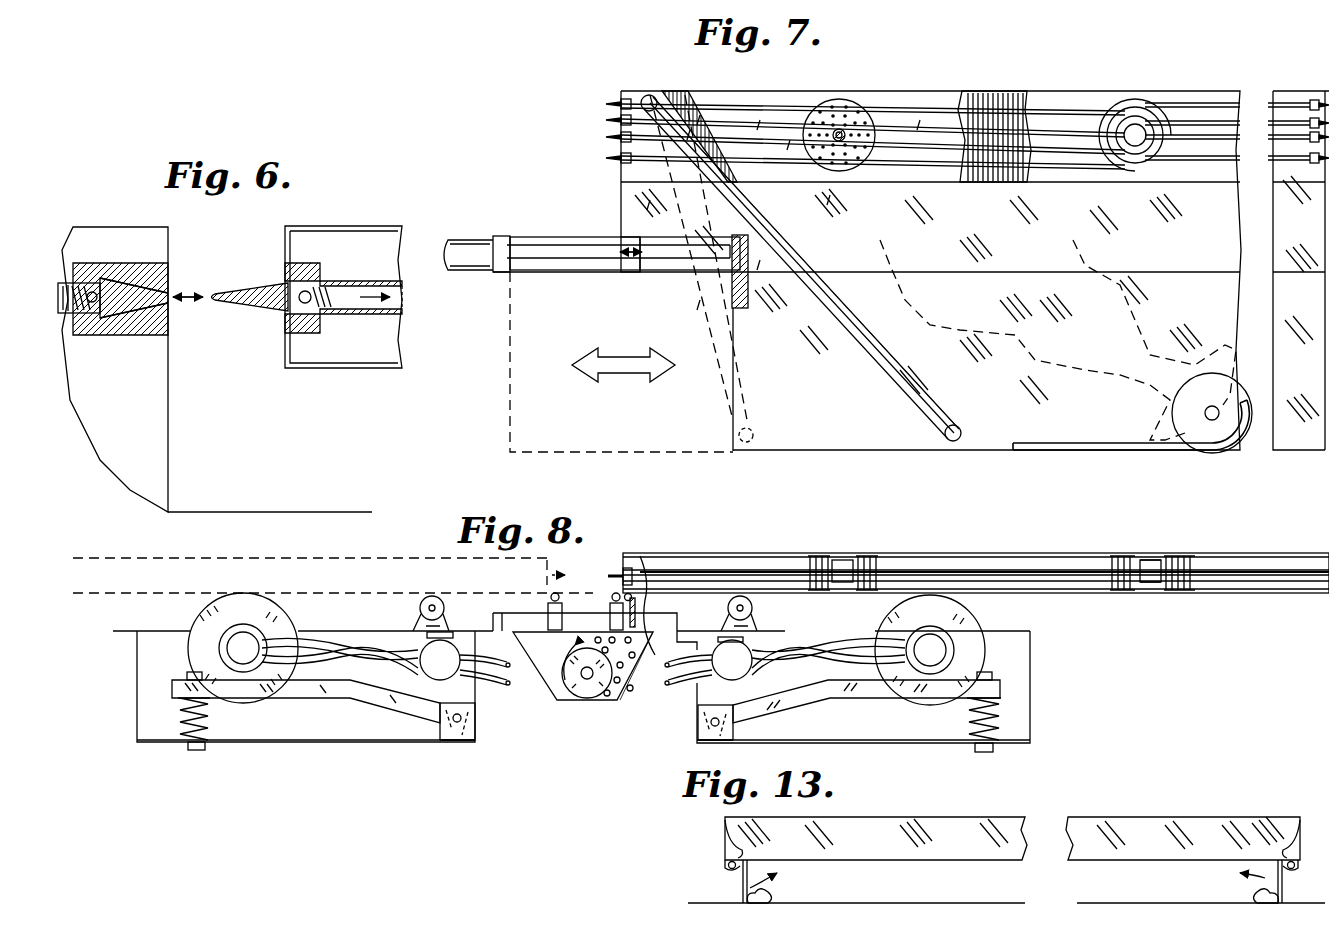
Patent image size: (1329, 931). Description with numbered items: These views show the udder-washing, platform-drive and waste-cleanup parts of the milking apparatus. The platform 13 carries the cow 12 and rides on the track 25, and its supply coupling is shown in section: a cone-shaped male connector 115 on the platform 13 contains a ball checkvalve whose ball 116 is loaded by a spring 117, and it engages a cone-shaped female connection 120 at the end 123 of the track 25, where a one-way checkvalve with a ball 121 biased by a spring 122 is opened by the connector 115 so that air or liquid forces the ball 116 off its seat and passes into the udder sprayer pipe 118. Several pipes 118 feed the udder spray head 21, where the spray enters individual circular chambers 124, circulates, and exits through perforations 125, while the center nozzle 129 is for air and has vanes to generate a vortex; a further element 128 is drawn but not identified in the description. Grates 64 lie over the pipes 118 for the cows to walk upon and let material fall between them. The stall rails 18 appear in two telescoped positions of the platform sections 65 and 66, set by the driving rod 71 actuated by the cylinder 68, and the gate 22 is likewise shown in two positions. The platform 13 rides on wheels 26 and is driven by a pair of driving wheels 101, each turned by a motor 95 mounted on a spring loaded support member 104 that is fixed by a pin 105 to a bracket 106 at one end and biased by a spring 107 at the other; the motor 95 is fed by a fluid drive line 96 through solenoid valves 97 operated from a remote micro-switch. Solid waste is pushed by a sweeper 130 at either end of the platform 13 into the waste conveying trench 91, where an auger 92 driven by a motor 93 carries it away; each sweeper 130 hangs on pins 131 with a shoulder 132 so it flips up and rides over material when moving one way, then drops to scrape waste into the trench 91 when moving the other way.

In FIG. 7, the cow 12 is at (1132, 305).
In FIG. 6, the platform 13 is at (340, 234).
In FIG. 7, the platform 13 is at (997, 455).
In FIG. 8, the platform 13 is at (692, 548).
In FIG. 13, the platform 13 is at (880, 847).
In FIG. 7, the stall rails 18 is at (862, 340).
In FIG. 7, the udder spray head 21 is at (857, 100).
In FIG. 8, the udder spray head 21 is at (1185, 530).
In FIG. 7, the gate 22 is at (1103, 452).
In FIG. 6, the track 25 is at (290, 512).
In FIG. 8, the wheels 26 is at (427, 597).
In FIG. 7, the grates 64 is at (1003, 105).
In FIG. 7, the platform section 65 is at (840, 440).
In FIG. 7, the platform section 66 is at (630, 200).
In FIG. 7, the cylinder 68 is at (465, 240).
In FIG. 7, the driving rod 71 is at (538, 250).
In FIG. 8, the waste conveying trench 91 is at (622, 680).
In FIG. 8, the auger 92 is at (553, 682).
In FIG. 8, the motor 93 is at (583, 692).
In FIG. 8, the motor 95 is at (258, 680).
In FIG. 8, the fluid drive line 96 is at (387, 662).
In FIG. 8, the solenoid valves 97 is at (445, 675).
In FIG. 8, the driving wheels 101 is at (243, 597).
In FIG. 8, the spring loaded support member 104 is at (298, 690).
In FIG. 8, the pin 105 is at (462, 718).
In FIG. 8, the bracket 106 is at (455, 748).
In FIG. 8, the spring 107 is at (198, 750).
In FIG. 6, the cone-shaped male connector 115 is at (248, 270).
In FIG. 7, the cone-shaped male connector 115 is at (615, 104).
In FIG. 8, the cone-shaped male connector 115 is at (620, 570).
In FIG. 6, the ball 116 is at (310, 306).
In FIG. 6, the spring 117 is at (340, 275).
In FIG. 6, the udder sprayer pipe 118 is at (382, 314).
In FIG. 7, the udder sprayer pipe 118 is at (735, 92).
In FIG. 8, the udder sprayer pipe 118 is at (770, 573).
In FIG. 6, the cone-shaped female connection 120 is at (170, 305).
In FIG. 6, the ball 121 is at (97, 290).
In FIG. 6, the spring 122 is at (79, 285).
In FIG. 6, the end of the track 123 is at (168, 415).
In FIG. 7, the circular chambers 124 is at (1145, 112).
In FIG. 8, the circular chambers 124 is at (1193, 562).
In FIG. 7, the perforations 125 is at (882, 98).
In FIG. 7, the connector rod 128 is at (1217, 120).
In FIG. 7, the center nozzle 129 is at (1125, 118).
In FIG. 8, the sweeper 130 is at (633, 645).
In FIG. 13, the sweeper 130 is at (745, 878).
In FIG. 8, the pins 131 is at (625, 594).
In FIG. 13, the pins 131 is at (728, 864).
In FIG. 8, the shoulder 132 is at (640, 600).
In FIG. 13, the shoulder 132 is at (726, 830).